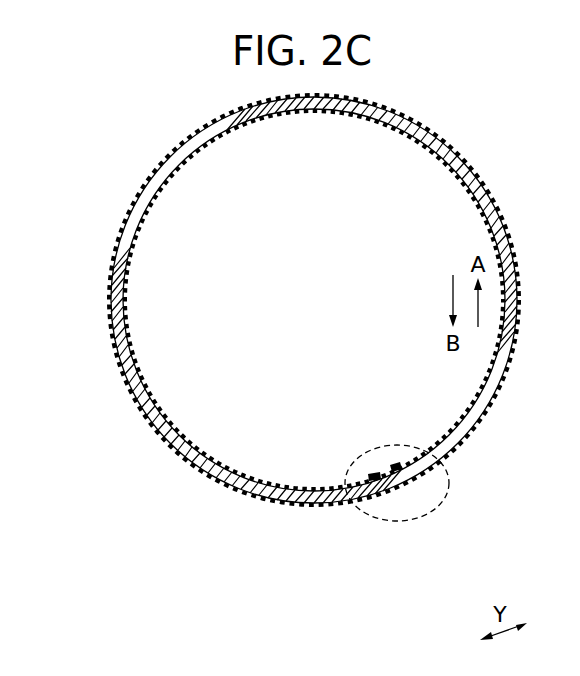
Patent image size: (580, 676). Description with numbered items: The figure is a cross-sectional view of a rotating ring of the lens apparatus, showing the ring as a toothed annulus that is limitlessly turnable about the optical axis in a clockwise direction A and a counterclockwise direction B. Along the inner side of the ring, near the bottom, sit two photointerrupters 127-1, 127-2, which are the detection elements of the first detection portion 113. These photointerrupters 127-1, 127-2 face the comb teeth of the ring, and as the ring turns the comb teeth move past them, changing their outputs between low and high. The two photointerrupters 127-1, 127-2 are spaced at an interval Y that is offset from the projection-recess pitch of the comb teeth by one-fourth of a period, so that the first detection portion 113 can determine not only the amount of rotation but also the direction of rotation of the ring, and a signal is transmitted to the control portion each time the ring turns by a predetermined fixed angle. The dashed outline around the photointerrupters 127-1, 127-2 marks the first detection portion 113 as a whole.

The photointerrupter 127-1 is at (372, 470).
The photointerrupter 127-2 is at (393, 462).
The first detection portion 113 is at (423, 517).